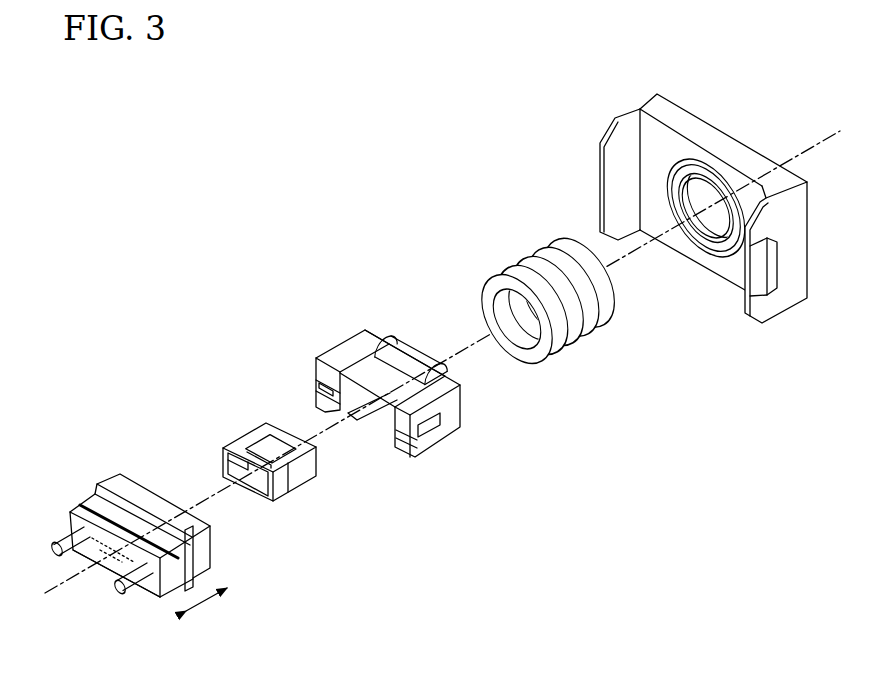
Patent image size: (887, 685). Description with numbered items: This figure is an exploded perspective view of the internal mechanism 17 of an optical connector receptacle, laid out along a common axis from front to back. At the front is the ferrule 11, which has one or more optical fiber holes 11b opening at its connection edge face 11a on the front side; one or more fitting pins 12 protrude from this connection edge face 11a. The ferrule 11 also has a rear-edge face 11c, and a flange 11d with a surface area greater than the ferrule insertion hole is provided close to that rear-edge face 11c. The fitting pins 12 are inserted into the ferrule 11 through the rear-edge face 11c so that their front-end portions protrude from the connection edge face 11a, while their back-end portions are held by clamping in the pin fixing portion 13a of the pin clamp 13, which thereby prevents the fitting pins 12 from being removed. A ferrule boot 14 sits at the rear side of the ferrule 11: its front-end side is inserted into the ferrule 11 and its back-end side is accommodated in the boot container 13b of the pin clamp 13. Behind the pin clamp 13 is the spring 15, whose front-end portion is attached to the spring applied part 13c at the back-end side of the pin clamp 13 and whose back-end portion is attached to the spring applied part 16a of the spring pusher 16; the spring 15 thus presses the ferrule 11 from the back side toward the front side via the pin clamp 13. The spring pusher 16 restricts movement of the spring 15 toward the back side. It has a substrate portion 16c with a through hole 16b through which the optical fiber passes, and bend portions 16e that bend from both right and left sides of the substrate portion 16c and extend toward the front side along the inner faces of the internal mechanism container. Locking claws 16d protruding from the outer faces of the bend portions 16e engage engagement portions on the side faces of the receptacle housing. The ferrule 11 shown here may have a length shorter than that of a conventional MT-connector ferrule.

The ferrule 11 is at (72, 499).
The connection edge face 11a is at (120, 570).
The optical fiber holes 11b is at (96, 554).
The rear-edge face 11c is at (213, 548).
The flange 11d is at (127, 490).
The fitting pins 12 is at (63, 539).
The pin clamp 13 is at (332, 337).
The pin fixing portion 13a is at (317, 382).
The boot container 13b is at (378, 424).
The spring applied part 13c is at (411, 350).
The ferrule boot 14 is at (245, 432).
The spring 15 is at (538, 248).
The spring pusher 16 is at (618, 105).
The spring applied part 16a is at (710, 238).
The through hole 16b is at (713, 193).
The substrate portion 16c is at (690, 120).
The locking claws 16d is at (778, 268).
The bend portions 16e is at (620, 156).
The internal mechanism 17 is at (170, 283).